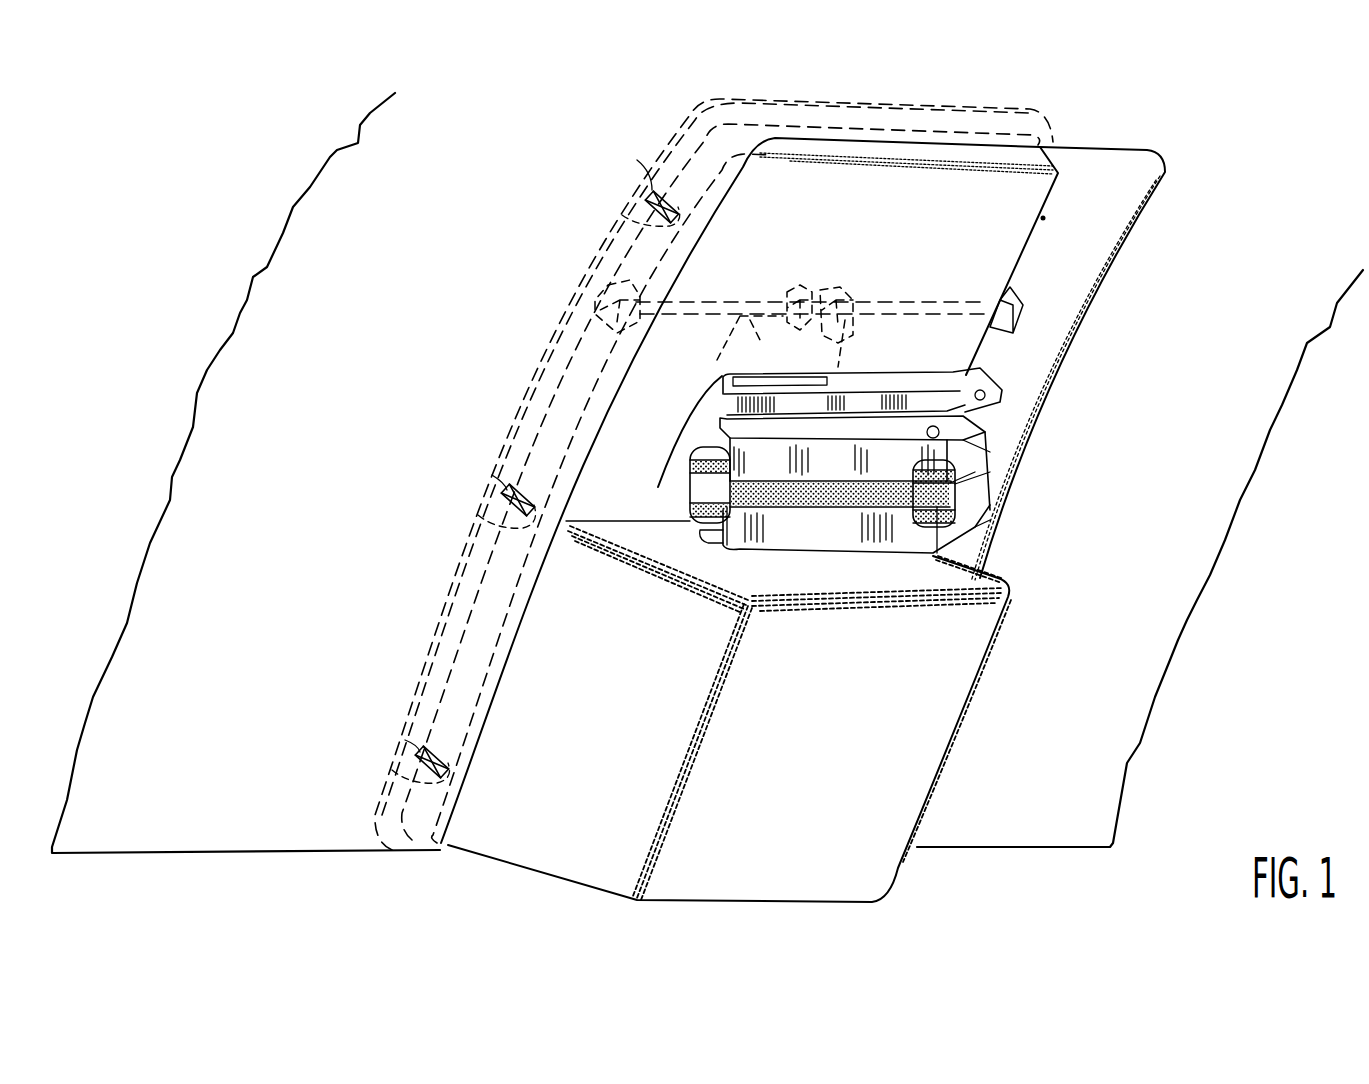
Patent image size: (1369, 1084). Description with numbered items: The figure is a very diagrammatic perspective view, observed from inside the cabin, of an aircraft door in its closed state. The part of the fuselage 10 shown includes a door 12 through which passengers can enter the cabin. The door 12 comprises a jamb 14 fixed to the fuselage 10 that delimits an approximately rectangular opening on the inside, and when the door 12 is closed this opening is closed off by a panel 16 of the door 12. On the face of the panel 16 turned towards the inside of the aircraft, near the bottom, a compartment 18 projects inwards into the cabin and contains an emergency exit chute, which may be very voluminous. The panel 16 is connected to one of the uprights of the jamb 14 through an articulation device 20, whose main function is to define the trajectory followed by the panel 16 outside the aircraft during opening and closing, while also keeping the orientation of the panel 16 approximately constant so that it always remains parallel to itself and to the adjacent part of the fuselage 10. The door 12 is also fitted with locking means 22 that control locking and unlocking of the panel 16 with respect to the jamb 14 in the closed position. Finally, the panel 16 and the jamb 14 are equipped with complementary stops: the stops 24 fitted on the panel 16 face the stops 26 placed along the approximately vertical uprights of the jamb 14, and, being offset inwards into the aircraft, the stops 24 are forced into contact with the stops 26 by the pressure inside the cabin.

The fuselage 10 is at (270, 287).
The door 12 is at (1185, 145).
The jamb 14 is at (1105, 217).
The panel 16 is at (1017, 178).
The compartment 18 is at (556, 827).
The articulation device 20 is at (790, 552).
The locking means 22 is at (815, 282).
The stops 24 is at (622, 215).
The stops 26 is at (637, 160).